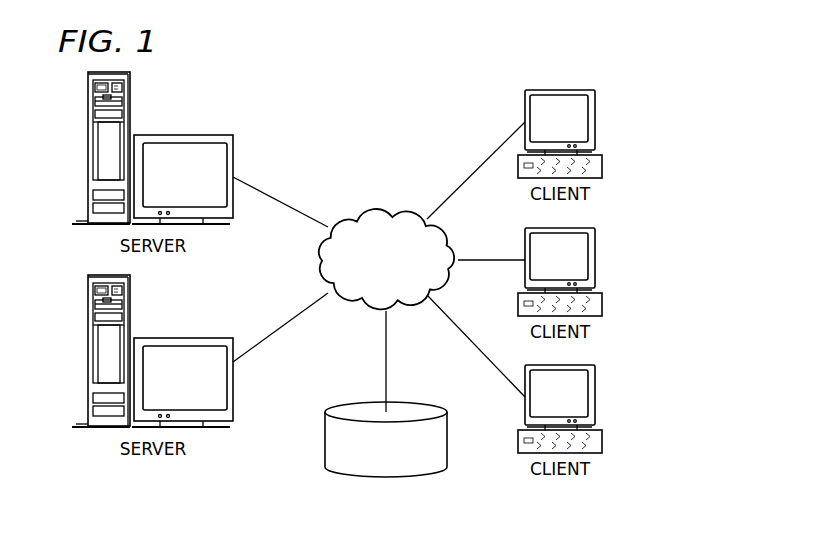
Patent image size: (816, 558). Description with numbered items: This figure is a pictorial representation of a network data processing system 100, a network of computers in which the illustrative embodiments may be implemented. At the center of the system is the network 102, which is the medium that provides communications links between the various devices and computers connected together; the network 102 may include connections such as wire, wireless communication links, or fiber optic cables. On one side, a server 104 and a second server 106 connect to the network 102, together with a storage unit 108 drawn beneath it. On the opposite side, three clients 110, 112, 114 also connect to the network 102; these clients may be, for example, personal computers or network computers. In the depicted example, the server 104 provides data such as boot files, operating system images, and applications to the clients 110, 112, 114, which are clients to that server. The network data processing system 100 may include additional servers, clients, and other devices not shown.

The network data processing system 100 is at (438, 99).
The network 102 is at (360, 212).
The server 104 is at (88, 149).
The server 106 is at (88, 352).
The storage unit 108 is at (370, 477).
The client 110 is at (595, 120).
The client 112 is at (595, 268).
The client 114 is at (595, 395).